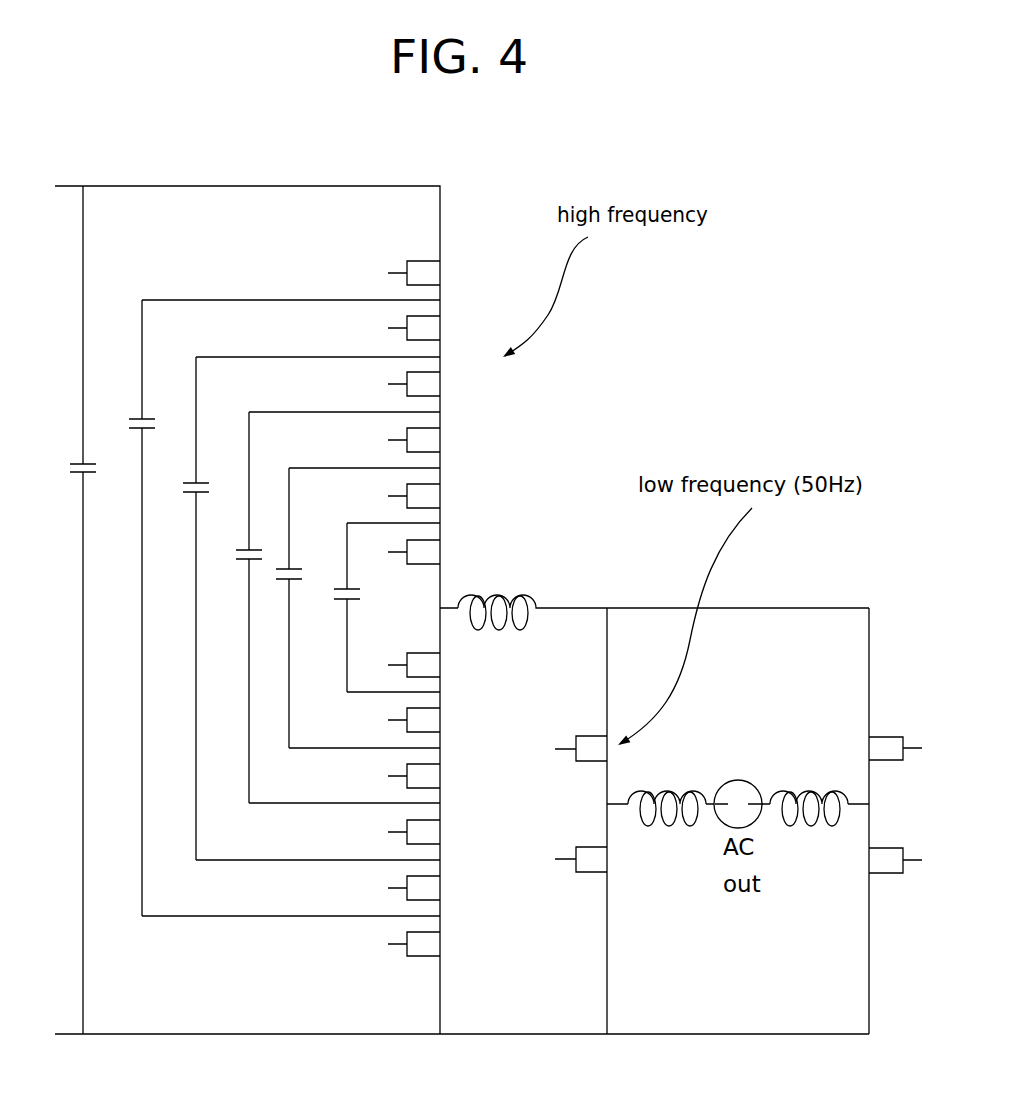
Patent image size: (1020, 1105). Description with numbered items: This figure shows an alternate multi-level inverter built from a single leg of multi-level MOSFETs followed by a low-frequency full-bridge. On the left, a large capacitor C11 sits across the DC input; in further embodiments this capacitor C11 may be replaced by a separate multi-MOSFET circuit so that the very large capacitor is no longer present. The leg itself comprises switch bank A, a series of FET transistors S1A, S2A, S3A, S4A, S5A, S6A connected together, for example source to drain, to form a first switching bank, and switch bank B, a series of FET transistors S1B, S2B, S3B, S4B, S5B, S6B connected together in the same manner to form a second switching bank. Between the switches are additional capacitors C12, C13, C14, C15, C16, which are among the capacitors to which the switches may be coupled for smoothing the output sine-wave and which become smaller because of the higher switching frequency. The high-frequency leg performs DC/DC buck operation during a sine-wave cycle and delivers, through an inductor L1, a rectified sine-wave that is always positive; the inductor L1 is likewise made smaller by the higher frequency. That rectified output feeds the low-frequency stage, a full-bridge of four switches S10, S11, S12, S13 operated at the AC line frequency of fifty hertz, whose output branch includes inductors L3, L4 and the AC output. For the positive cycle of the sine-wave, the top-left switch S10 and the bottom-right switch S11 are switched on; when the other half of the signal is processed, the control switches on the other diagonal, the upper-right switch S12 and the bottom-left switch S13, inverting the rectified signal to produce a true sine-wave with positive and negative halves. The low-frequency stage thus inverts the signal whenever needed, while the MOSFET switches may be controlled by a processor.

The capacitor C11 is at (63, 449).
The capacitor C12 is at (121, 401).
The capacitor C13 is at (177, 469).
The capacitor C14 is at (232, 534).
The capacitor C15 is at (308, 560).
The capacitor C16 is at (367, 582).
The FET transistor S1A is at (440, 274).
The FET transistor S2A is at (440, 329).
The FET transistor S3A is at (440, 385).
The FET transistor S4A is at (440, 441).
The FET transistor S5A is at (440, 497).
The FET transistor S6A is at (440, 553).
The FET transistor S1B is at (487, 923).
The FET transistor S2B is at (487, 867).
The FET transistor S3B is at (487, 811).
The FET transistor S4B is at (487, 755).
The FET transistor S5B is at (487, 699).
The FET transistor S6B is at (487, 644).
The switch S10 is at (558, 750).
The switch S11 is at (910, 848).
The switch S12 is at (910, 735).
The switch S13 is at (558, 861).
The inductor L1 is at (497, 595).
The inductor L3 is at (667, 789).
The inductor L4 is at (809, 789).